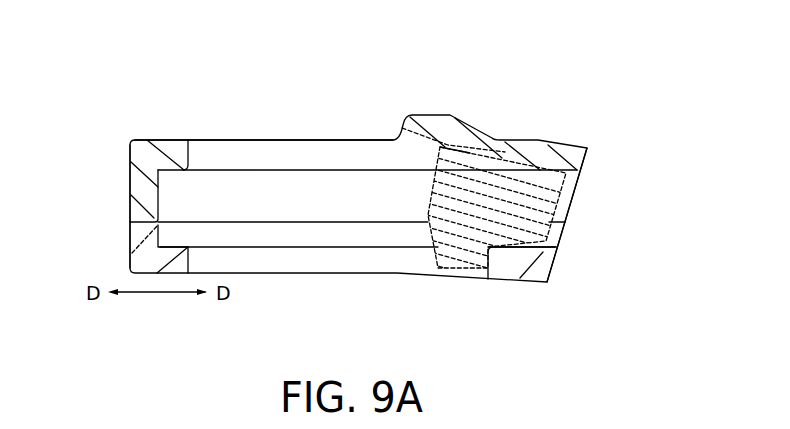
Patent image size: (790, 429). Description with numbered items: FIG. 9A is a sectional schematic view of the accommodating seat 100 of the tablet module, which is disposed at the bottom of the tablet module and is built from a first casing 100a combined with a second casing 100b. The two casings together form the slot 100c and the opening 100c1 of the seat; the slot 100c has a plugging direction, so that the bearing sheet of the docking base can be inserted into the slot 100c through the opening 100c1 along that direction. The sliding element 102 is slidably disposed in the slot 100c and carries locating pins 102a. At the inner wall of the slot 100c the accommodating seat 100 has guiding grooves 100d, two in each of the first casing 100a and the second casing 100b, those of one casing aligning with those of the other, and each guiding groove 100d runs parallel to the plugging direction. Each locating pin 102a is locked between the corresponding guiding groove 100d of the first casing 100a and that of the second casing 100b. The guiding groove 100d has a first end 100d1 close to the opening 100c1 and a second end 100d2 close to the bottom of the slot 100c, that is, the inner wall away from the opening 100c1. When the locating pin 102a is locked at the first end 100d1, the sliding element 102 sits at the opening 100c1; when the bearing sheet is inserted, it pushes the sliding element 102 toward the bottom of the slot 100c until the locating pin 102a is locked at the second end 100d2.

The accommodating seat 100 is at (205, 87).
The first casing 100a is at (128, 252).
The second casing 100b is at (128, 178).
The slot 100c is at (362, 237).
The opening 100c1 is at (560, 238).
The guiding groove 100d is at (328, 149).
The first end 100d1 is at (492, 150).
The second end 100d2 is at (185, 152).
The sliding element 102 is at (540, 203).
The locating pin 102a is at (468, 128).